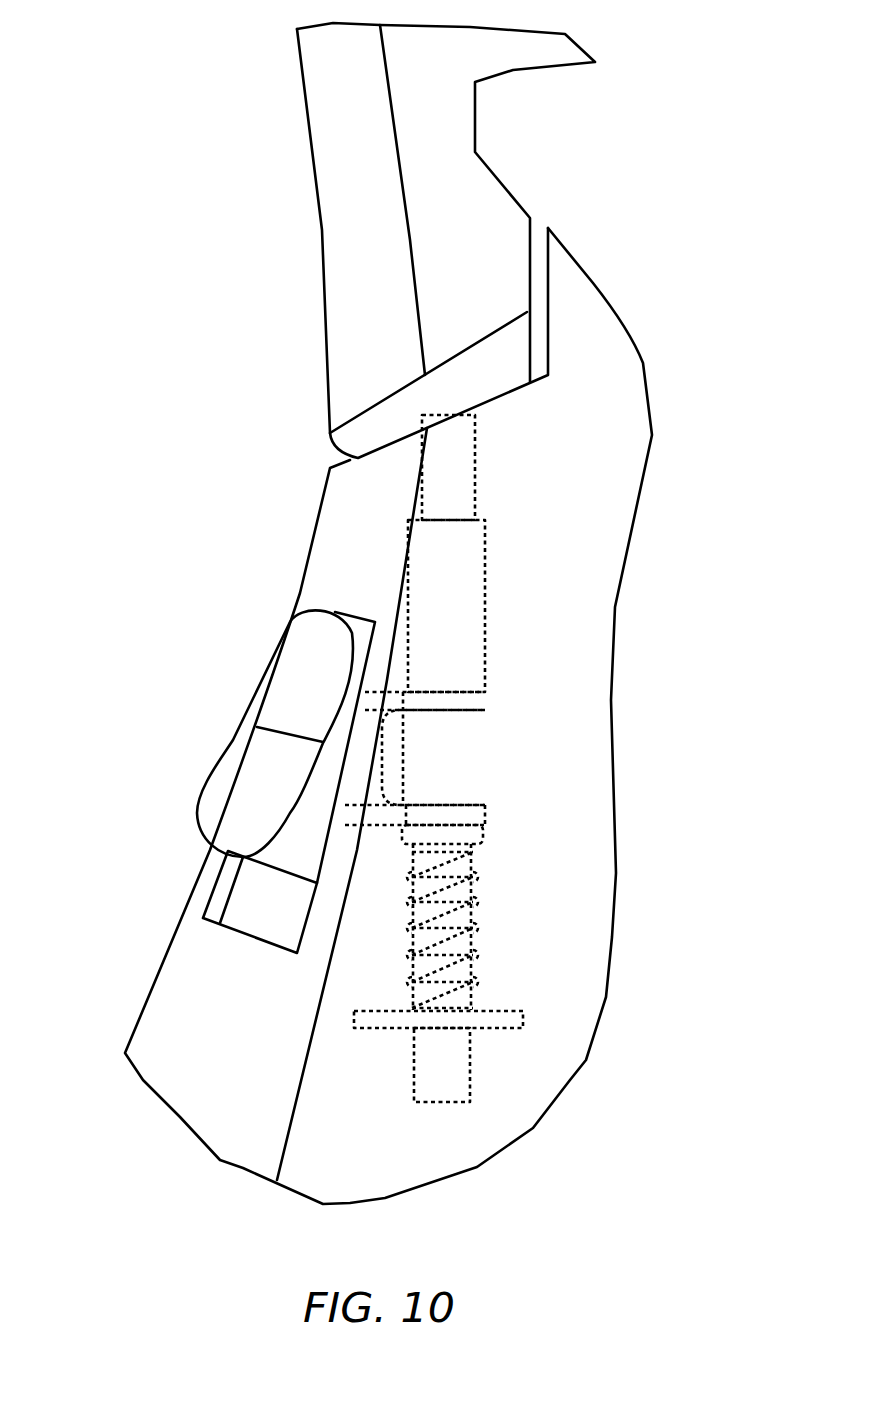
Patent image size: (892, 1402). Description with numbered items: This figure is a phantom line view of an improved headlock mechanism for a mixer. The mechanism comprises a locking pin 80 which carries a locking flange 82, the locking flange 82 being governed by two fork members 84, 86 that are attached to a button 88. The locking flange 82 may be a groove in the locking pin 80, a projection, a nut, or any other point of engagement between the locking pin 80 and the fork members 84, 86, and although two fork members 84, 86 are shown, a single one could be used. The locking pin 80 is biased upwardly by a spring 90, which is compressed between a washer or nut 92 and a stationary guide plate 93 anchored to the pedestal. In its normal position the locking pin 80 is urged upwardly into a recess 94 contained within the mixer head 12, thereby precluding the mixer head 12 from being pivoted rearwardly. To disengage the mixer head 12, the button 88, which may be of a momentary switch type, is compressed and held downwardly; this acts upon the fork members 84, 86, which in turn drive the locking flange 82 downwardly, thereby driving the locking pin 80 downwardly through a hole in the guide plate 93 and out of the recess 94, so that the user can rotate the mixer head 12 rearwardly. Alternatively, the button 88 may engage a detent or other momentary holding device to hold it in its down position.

The mixer head 12 is at (308, 162).
The locking pin 80 is at (445, 1087).
The locking flange 82 is at (485, 761).
The fork member 84 is at (487, 694).
The fork member 86 is at (485, 808).
The button 88 is at (258, 772).
The spring 90 is at (483, 935).
The washer or nut 92 is at (484, 836).
The stationary guide plate 93 is at (505, 1034).
The recess 94 is at (455, 432).